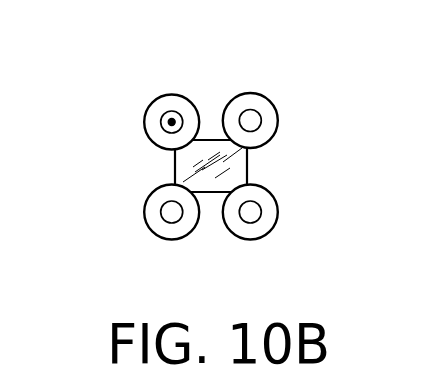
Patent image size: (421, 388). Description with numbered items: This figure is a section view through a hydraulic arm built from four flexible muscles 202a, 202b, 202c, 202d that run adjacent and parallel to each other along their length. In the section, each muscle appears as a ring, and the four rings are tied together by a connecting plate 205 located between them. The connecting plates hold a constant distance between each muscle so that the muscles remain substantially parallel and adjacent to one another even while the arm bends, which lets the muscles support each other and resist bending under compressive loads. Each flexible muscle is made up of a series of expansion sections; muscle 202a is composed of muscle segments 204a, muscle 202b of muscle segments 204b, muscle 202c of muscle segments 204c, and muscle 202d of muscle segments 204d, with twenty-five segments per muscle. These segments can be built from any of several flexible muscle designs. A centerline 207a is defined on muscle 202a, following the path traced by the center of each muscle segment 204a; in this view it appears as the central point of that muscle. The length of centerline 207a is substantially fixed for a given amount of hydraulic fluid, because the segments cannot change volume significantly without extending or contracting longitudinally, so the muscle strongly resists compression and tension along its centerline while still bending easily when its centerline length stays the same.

The flexible muscle 202a is at (157, 95).
The flexible muscle 202b is at (268, 92).
The flexible muscle 202c is at (157, 240).
The flexible muscle 202d is at (263, 240).
The muscle segment 204a is at (148, 117).
The muscle segment 204b is at (278, 112).
The muscle segment 204c is at (145, 220).
The muscle segment 204d is at (277, 220).
The connecting plate 205 is at (245, 165).
The centerline 207a is at (171, 122).